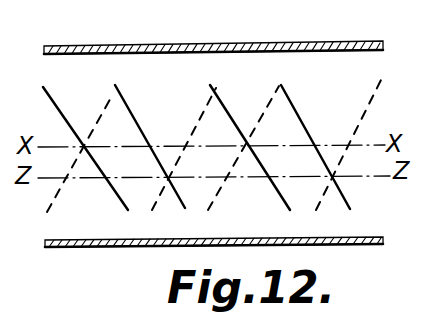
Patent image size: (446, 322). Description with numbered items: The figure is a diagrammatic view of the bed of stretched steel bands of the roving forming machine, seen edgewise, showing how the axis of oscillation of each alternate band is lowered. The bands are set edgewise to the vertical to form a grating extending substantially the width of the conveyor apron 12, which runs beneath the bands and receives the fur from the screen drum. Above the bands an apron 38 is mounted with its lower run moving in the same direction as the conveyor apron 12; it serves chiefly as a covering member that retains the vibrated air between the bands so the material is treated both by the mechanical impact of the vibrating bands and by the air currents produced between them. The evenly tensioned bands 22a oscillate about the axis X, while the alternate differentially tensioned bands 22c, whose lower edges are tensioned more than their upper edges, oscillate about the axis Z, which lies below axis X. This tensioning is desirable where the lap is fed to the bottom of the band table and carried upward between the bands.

The apron 38 is at (129, 30).
The conveyor apron 12 is at (113, 247).
The evenly tensioned bands 22a is at (75, 104).
The differentially tensioned bands 22c is at (137, 123).